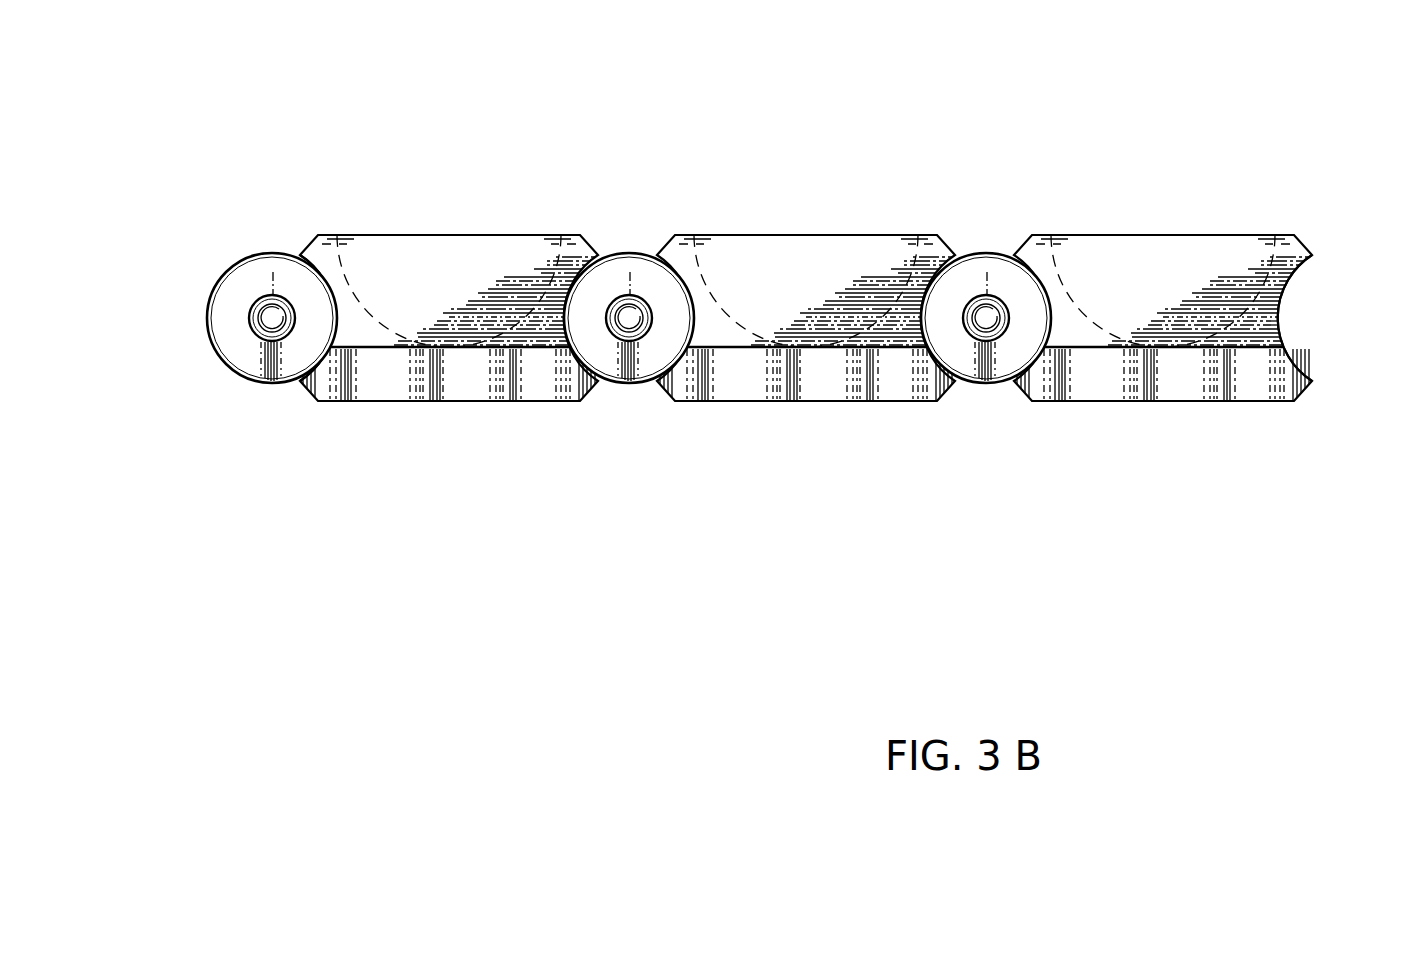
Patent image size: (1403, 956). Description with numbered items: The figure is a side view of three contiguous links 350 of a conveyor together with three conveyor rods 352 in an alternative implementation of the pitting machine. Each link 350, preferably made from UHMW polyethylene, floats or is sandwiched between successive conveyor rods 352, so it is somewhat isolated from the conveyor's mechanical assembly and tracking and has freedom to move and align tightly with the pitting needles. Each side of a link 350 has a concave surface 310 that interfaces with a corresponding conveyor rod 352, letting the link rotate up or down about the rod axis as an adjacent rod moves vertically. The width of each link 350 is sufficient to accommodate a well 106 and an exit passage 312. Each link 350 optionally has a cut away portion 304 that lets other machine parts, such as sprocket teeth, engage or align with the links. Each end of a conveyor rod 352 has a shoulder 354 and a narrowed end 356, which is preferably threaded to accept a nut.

The link 350 is at (750, 291).
The well 106 is at (792, 263).
The cut away portion 304 is at (806, 375).
The exit passage 312 is at (806, 427).
The concave surface 310 is at (1297, 308).
The conveyor rod 352 is at (226, 286).
The shoulder 354 is at (220, 246).
The narrowed end 356 is at (222, 353).